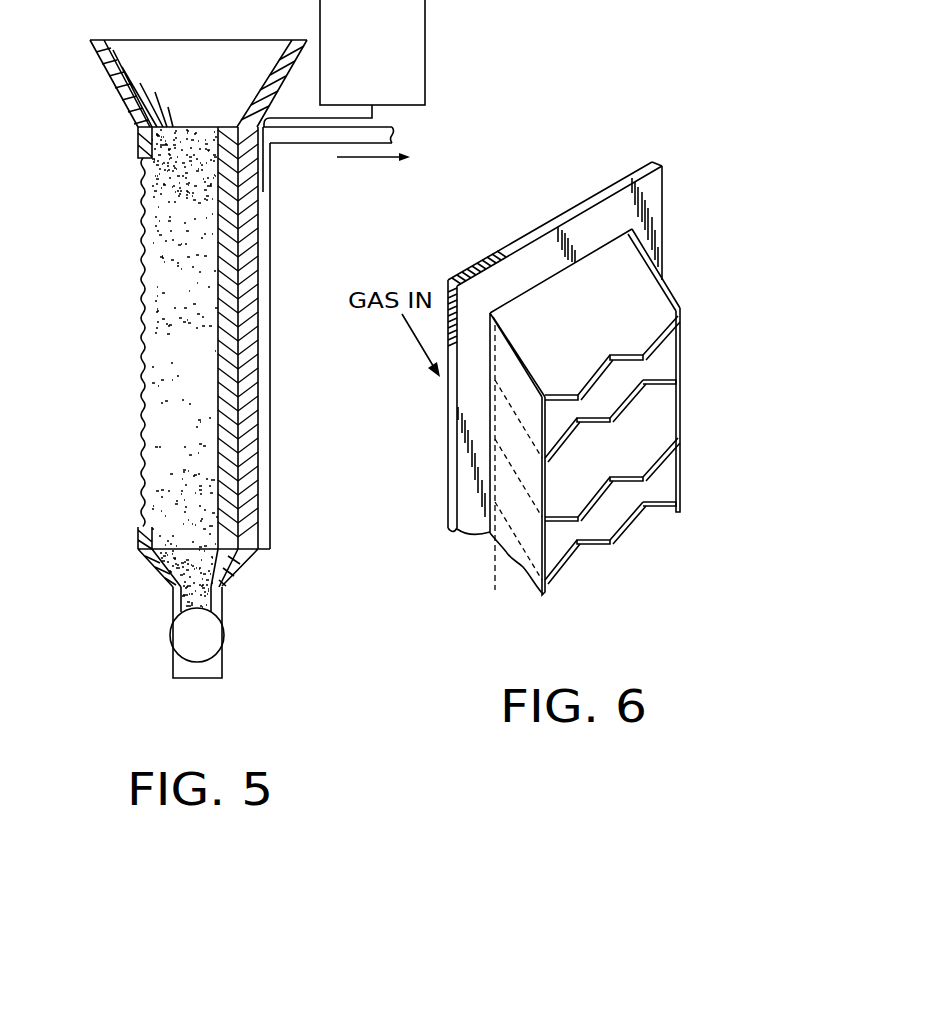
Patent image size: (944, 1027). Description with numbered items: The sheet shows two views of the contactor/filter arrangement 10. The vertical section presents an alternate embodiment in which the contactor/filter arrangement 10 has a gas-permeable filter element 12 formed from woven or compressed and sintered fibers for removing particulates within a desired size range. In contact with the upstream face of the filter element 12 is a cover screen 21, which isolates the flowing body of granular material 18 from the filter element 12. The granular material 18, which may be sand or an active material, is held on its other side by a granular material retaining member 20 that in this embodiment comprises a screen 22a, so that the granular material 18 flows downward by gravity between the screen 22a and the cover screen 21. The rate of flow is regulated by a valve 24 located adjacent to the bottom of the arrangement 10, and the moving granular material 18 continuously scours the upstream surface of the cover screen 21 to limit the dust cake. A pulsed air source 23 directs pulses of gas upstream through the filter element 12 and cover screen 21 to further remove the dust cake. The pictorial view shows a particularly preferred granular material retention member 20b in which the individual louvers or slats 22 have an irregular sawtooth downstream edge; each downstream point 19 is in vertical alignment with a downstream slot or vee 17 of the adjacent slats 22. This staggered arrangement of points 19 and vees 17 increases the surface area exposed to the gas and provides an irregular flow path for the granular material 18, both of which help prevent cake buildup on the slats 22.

In FIG. 5, the contactor/filter arrangement 10 is at (266, 263).
In FIG. 5, the gas-permeable filter element 12 is at (247, 420).
In FIG. 6, the downstream slot or vee 17 is at (598, 358).
In FIG. 5, the granular material 18 is at (195, 347).
In FIG. 6, the downstream point 19 is at (648, 357).
In FIG. 5, the granular material retaining member 20 is at (126, 252).
In FIG. 6, the granular material retention member 20b is at (670, 227).
In FIG. 5, the cover screen 21 is at (231, 395).
In FIG. 6, the louvers or slats 22 is at (642, 303).
In FIG. 5, the screen 22a is at (138, 327).
In FIG. 5, the pulsed air source 23 is at (358, 96).
In FIG. 5, the valve 24 is at (225, 637).